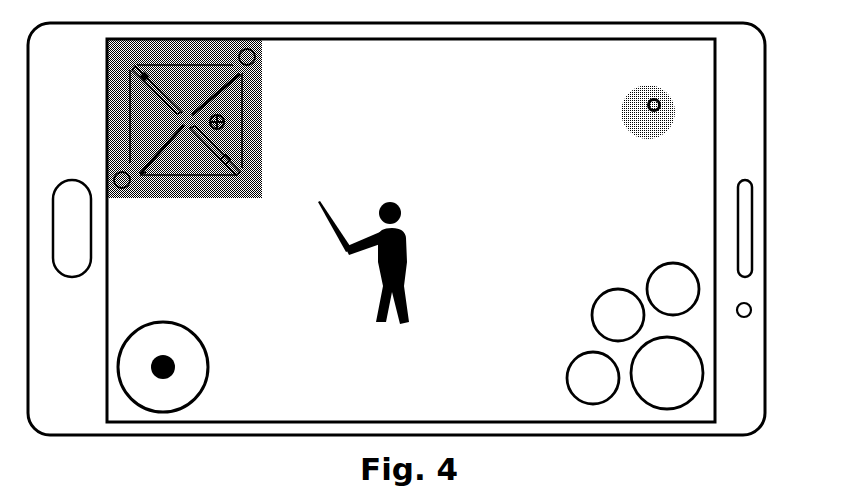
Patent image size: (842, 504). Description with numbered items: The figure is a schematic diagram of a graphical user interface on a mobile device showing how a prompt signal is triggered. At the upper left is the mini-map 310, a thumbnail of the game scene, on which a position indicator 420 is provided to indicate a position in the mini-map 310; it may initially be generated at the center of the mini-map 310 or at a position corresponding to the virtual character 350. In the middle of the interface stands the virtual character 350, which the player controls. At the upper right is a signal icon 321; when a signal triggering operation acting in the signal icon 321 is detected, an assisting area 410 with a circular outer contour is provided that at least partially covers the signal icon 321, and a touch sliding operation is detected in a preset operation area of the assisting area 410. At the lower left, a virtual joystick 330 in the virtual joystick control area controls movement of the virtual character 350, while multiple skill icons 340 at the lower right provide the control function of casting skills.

The mini-map 310 is at (263, 125).
The position indicator 420 is at (212, 198).
The signal icon 321 is at (646, 91).
The assisting area 410 is at (648, 140).
The virtual character 350 is at (400, 233).
The skill icons 340 is at (588, 325).
The virtual joystick 330 is at (210, 370).